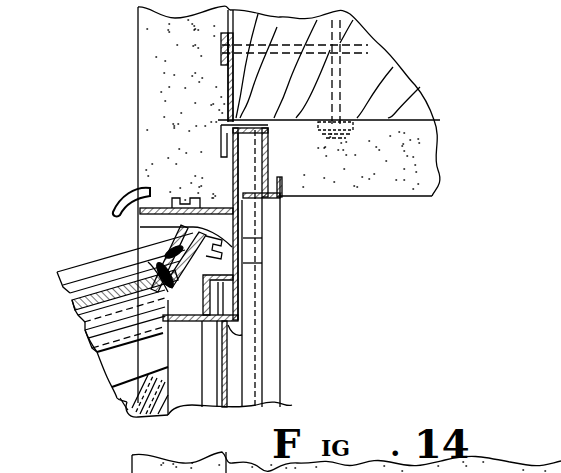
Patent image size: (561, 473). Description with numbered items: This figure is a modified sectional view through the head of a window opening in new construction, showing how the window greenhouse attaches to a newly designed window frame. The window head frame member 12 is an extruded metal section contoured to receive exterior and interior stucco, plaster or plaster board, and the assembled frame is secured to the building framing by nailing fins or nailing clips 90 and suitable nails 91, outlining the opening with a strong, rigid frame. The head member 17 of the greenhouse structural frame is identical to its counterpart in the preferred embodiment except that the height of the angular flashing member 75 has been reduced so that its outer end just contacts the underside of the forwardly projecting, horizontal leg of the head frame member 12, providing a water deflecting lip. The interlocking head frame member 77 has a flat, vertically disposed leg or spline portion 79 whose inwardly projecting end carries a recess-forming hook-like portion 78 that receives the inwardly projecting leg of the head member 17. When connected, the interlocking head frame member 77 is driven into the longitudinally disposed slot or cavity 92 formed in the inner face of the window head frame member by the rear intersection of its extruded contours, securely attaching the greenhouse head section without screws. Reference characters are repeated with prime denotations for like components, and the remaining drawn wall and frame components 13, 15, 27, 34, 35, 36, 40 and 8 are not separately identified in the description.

The concrete wall 13 is at (138, 66).
The window head frame member 12 is at (160, 198).
The nails 91 is at (318, 78).
The nailing fins or nailing clips 90 is at (312, 133).
The slots and cavities 92 is at (242, 170).
The trim member 27 is at (76, 270).
The tilted fastener bracket 35 is at (143, 260).
The gasket strip 34 is at (72, 314).
The L-shaped bracket 15 is at (222, 270).
The interlocking head frame member 77 is at (232, 304).
The angular flashing member 75 is at (248, 239).
The spline portion 79 is at (240, 263).
The recess-forming hook-like portion 78 is at (232, 332).
The head member 17 is at (186, 323).
The concrete wall portion 40 is at (112, 382).
The wall edge 36 is at (124, 414).
The partial numeral 8 is at (7, 456).